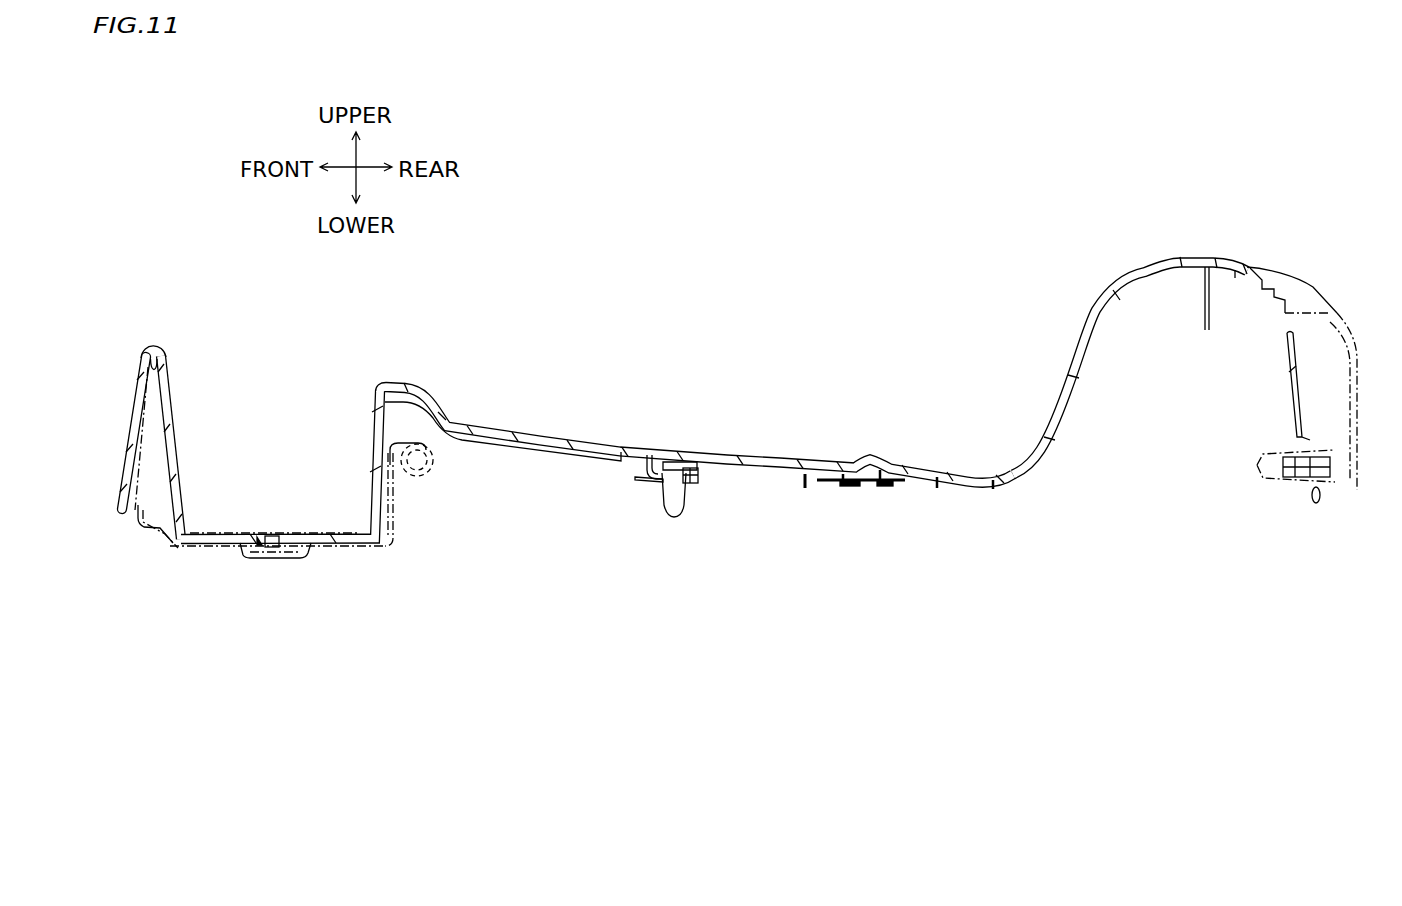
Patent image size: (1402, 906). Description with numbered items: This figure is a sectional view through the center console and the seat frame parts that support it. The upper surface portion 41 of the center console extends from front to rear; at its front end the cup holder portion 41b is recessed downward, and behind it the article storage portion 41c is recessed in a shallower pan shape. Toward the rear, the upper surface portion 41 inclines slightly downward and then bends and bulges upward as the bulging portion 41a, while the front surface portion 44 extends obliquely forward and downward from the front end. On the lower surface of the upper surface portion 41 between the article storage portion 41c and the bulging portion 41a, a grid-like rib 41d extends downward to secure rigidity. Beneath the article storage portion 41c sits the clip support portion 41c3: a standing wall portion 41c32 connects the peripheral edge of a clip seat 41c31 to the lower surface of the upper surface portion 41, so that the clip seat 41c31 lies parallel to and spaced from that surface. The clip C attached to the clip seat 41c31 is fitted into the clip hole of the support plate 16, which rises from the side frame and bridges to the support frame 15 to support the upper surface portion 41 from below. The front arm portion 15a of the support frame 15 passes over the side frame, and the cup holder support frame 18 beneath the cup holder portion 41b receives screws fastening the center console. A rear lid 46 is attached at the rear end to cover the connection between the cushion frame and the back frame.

The upper surface portion 41 is at (739, 369).
The bulging portion 41a is at (1163, 257).
The cup holder portion 41b is at (177, 428).
The article storage portion 41c is at (523, 426).
The clip support portion 41c3 is at (621, 492).
The clip seat 41c31 is at (657, 478).
The standing wall portion 41c32 is at (637, 465).
The grid-like rib 41d is at (940, 488).
The front surface portion 44 is at (130, 425).
The rear lid 46 is at (1353, 378).
The cup holder support frame 18 is at (208, 550).
The support frame 15 is at (446, 500).
The front arm portion 15a is at (418, 478).
The support plate 16 is at (712, 485).
The clip C is at (673, 487).